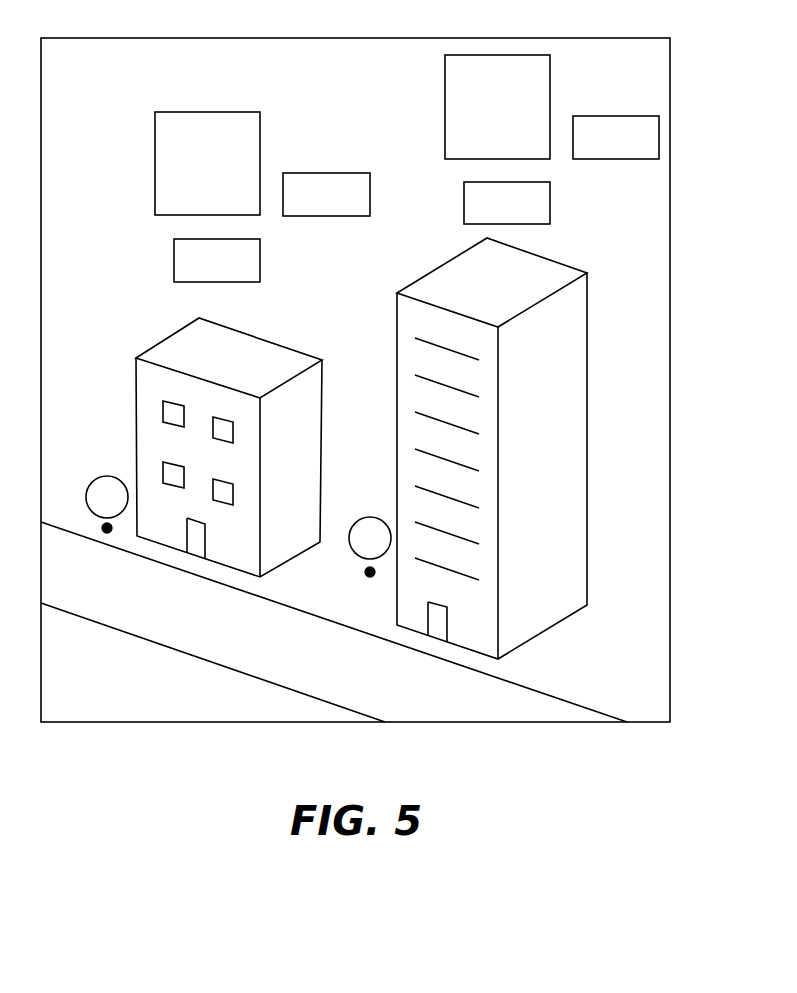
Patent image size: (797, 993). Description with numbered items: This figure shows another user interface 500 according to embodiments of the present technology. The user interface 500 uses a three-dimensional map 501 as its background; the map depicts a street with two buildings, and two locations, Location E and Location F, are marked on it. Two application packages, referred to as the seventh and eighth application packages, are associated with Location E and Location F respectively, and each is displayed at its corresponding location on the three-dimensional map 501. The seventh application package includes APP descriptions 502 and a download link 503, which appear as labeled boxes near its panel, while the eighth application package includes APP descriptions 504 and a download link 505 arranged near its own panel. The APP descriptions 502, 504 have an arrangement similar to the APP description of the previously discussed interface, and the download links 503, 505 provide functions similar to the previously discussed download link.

The user interface 500 is at (396, 368).
The three-dimensional map 501 is at (652, 198).
The APP descriptions 502 is at (217, 260).
The download link 503 is at (326, 194).
The APP descriptions 504 is at (507, 203).
The download link 505 is at (616, 137).